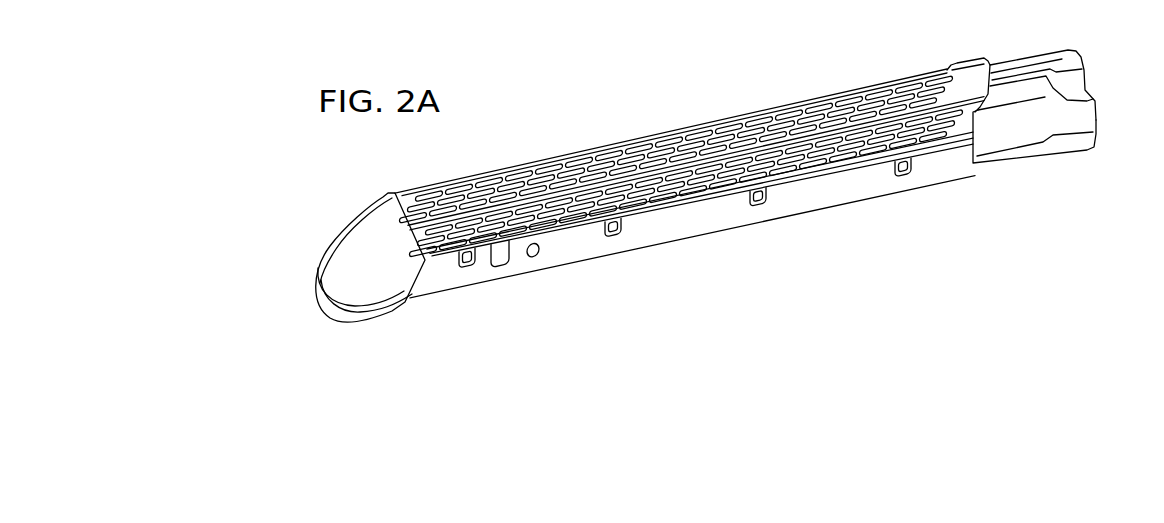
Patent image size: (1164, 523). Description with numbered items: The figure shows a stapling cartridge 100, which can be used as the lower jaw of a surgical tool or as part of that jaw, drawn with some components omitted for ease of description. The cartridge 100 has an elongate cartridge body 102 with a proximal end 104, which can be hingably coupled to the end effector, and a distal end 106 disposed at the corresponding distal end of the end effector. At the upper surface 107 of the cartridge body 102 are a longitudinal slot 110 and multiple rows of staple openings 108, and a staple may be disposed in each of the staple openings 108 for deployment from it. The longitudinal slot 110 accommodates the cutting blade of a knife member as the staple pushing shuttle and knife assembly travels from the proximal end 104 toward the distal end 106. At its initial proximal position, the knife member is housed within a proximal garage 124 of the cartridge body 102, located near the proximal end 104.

The cartridge 100 is at (601, 71).
The cartridge body 102 is at (883, 188).
The proximal end 104 is at (1092, 176).
The distal end 106 is at (365, 248).
The upper surface 107 is at (823, 82).
The staple openings 108 is at (738, 120).
The longitudinal slot 110 is at (584, 170).
The proximal garage 124 is at (1008, 63).